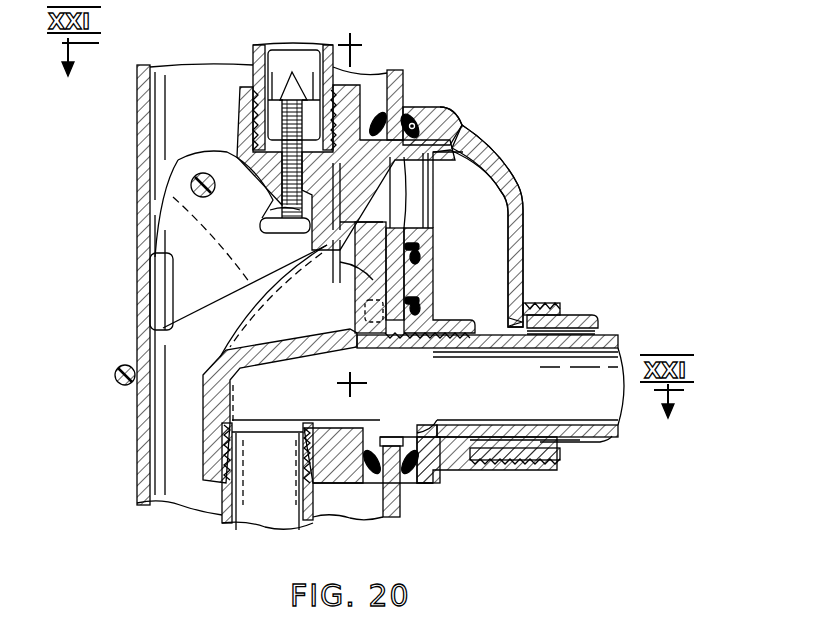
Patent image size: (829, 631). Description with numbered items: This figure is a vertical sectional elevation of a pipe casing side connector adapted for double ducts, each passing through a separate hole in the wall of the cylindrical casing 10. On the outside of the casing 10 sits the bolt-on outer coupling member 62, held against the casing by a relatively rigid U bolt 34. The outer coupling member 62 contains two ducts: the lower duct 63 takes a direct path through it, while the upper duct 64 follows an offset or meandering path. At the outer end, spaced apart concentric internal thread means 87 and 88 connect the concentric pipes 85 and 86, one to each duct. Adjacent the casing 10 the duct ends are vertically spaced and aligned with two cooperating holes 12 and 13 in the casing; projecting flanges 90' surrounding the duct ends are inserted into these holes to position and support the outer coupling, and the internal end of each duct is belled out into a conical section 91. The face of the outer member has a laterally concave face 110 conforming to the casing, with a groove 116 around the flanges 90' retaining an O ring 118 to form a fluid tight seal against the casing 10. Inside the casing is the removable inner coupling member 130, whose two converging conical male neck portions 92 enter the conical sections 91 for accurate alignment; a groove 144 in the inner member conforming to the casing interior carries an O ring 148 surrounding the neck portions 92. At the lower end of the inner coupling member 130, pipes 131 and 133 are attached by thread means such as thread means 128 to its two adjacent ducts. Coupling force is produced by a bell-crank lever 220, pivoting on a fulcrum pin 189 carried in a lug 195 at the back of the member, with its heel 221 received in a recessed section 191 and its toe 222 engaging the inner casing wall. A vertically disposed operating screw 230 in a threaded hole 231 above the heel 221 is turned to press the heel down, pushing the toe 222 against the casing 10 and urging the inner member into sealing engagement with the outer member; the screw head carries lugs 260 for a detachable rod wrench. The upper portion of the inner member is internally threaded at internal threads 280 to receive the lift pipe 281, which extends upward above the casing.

The casing 10 is at (140, 108).
The hole 12 is at (400, 473).
The hole 13 is at (403, 92).
The U bolt 34 is at (133, 368).
The outer coupling member 62 is at (515, 473).
The lower duct 63 is at (413, 368).
The upper duct 64 is at (484, 214).
The concentric pipe 85 is at (606, 442).
The concentric pipe 86 is at (590, 316).
The internal thread means 87 is at (457, 430).
The internal thread means 88 is at (547, 306).
The flange 90' is at (415, 283).
The conical section 91 is at (430, 173).
The conical male neck portion 92 is at (393, 143).
The laterally concave face 110 is at (390, 438).
The groove 116 is at (424, 125).
The O ring 118 is at (414, 117).
The thread means 128 is at (223, 469).
The inner coupling member 130 is at (204, 409).
The pipe 131 is at (220, 527).
The pipe 133 is at (313, 520).
The groove 144 is at (362, 462).
The O ring 148 is at (376, 137).
The fulcrum pin 189 is at (203, 173).
The recessed section 191 is at (262, 222).
The lug 195 is at (235, 157).
The bell-crank lever 220 is at (208, 315).
The heel 221 is at (270, 234).
The toe 222 is at (163, 293).
The operating screw 230 is at (280, 112).
The threaded hole 231 is at (272, 210).
The lug 260 is at (273, 80).
The internal threads 280 is at (260, 120).
The lift pipe 281 is at (262, 57).